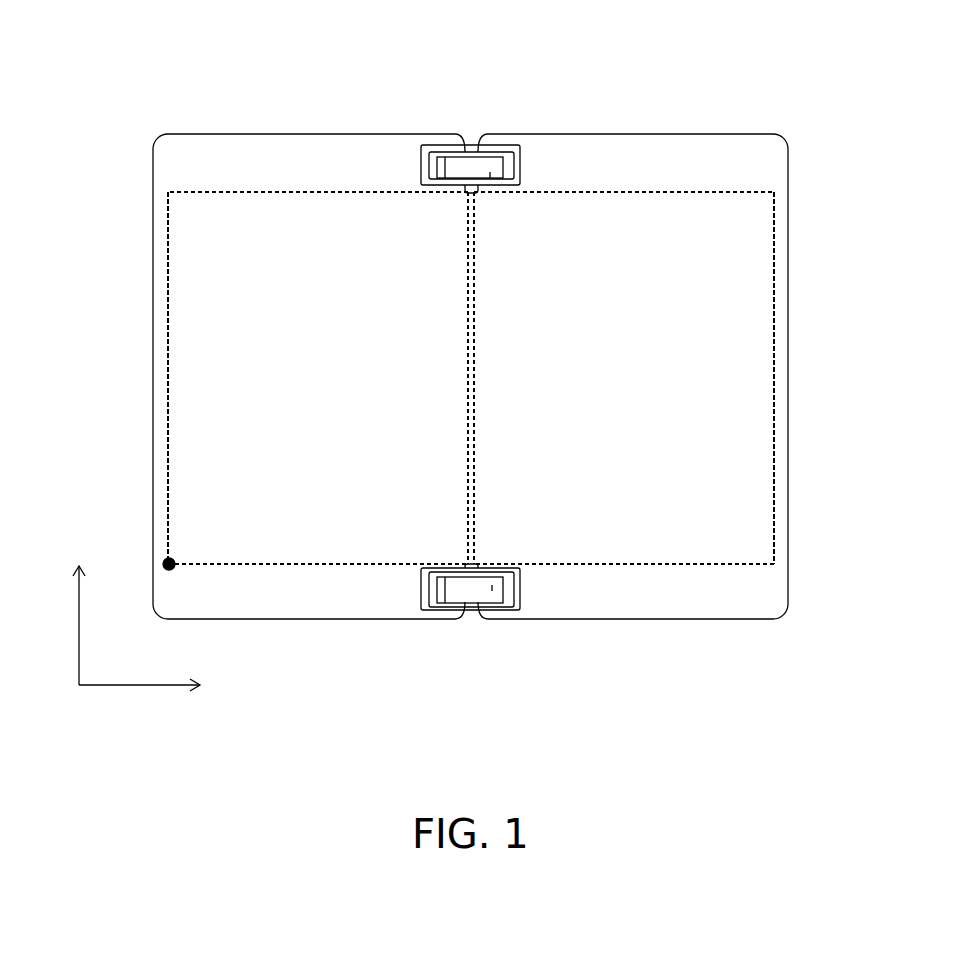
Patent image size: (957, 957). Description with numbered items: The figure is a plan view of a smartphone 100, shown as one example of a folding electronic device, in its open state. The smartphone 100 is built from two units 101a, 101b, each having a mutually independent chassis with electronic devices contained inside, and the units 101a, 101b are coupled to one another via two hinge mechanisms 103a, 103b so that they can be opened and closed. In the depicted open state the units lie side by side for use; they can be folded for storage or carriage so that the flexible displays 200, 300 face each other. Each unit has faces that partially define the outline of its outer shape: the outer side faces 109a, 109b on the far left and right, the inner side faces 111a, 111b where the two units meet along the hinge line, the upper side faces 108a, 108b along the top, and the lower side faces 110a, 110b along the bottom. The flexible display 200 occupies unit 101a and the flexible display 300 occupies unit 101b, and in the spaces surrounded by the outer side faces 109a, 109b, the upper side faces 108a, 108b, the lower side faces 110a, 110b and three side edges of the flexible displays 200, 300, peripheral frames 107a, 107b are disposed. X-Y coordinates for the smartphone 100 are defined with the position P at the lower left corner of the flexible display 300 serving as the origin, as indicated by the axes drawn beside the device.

The smartphone 100 is at (464, 376).
The unit 101a is at (688, 376).
The unit 101b is at (247, 376).
The hinge mechanism 103a is at (490, 190).
The hinge mechanism 103b is at (490, 580).
The peripheral frame 107a is at (780, 310).
The peripheral frame 107b is at (160, 312).
The upper side face 108a is at (718, 117).
The upper side face 108b is at (240, 118).
The outer side face 109a is at (803, 398).
The outer side face 109b is at (143, 405).
The lower side face 110a is at (603, 633).
The lower side face 110b is at (313, 633).
The inner side face 111a is at (460, 368).
The inner side face 111b is at (480, 368).
The flexible display 200 is at (678, 354).
The flexible display 300 is at (261, 354).
The position P is at (173, 559).